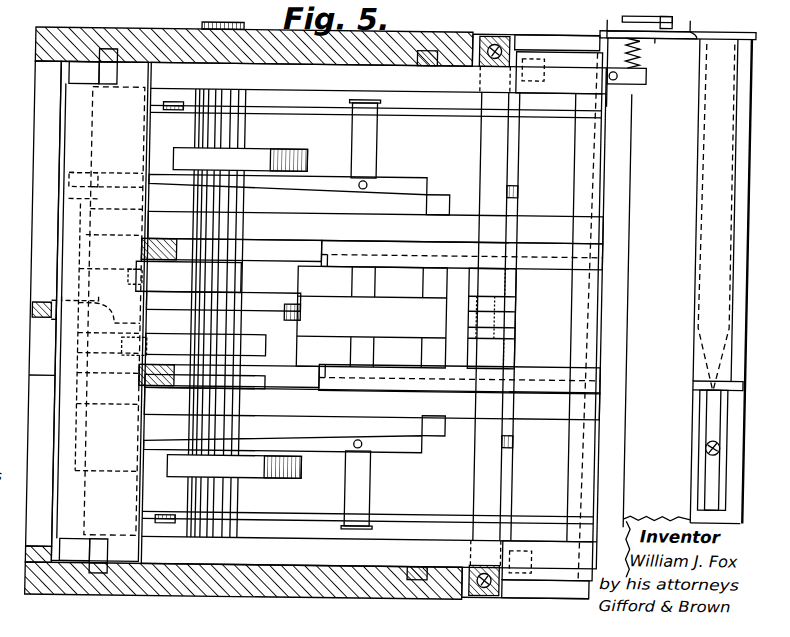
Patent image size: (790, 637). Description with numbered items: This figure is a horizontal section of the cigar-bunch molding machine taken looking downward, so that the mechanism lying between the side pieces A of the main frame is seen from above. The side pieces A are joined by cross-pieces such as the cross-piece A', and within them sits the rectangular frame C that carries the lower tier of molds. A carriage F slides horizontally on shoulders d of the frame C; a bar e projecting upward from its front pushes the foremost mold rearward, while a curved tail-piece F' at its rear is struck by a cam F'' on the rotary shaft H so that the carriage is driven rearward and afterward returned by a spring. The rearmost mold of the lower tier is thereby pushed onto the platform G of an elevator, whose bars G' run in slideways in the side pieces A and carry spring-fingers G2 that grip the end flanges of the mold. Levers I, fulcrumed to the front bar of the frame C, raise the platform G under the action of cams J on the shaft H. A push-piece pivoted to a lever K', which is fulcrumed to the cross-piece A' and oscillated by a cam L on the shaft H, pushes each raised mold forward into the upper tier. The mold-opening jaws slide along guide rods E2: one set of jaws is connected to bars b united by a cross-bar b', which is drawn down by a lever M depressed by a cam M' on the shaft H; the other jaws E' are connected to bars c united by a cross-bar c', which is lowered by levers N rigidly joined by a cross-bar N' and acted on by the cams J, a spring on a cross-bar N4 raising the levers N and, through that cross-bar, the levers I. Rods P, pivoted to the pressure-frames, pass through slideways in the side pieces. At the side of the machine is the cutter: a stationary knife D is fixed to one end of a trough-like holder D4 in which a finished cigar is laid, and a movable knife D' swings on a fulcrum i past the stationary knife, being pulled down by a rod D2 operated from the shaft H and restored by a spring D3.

The side pieces A is at (237, 299).
The cross-piece A' is at (42, 303).
The lever K' is at (49, 307).
The elevator-platform G is at (99, 311).
The elevator bars G' is at (108, 296).
The spring-fingers G2 is at (79, 310).
The frame C is at (374, 314).
The jaws E' is at (552, 316).
The bars c is at (507, 315).
The levers I is at (371, 311).
The tail-piece F' is at (372, 313).
The cams J is at (238, 280).
The cross-bar N4 is at (361, 314).
The levers N is at (285, 317).
The cross-bar N' is at (433, 318).
The cam F'' is at (230, 312).
The carriage F is at (461, 316).
The shoulders d is at (324, 315).
The rotary shaft H is at (189, 276).
The cam M' is at (223, 308).
The cam L is at (193, 361).
The lever M is at (371, 317).
The cross-bar b' is at (496, 316).
The cross-bar c' is at (496, 316).
The guide rods E2 is at (491, 562).
The bars b is at (539, 309).
The rods P is at (422, 314).
The bar e is at (617, 310).
The spring D3 is at (627, 72).
The fulcrum i is at (637, 56).
The movable knife D' is at (654, 26).
The rod D2 is at (632, 6).
The trough-like holder D4 is at (672, 209).
The stationary knife D is at (673, 273).